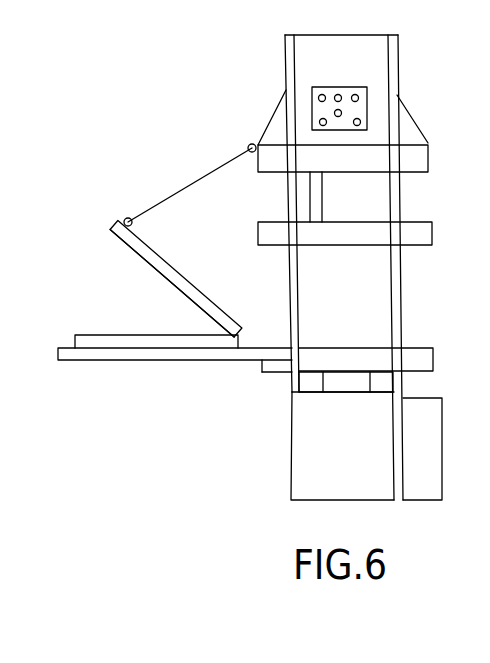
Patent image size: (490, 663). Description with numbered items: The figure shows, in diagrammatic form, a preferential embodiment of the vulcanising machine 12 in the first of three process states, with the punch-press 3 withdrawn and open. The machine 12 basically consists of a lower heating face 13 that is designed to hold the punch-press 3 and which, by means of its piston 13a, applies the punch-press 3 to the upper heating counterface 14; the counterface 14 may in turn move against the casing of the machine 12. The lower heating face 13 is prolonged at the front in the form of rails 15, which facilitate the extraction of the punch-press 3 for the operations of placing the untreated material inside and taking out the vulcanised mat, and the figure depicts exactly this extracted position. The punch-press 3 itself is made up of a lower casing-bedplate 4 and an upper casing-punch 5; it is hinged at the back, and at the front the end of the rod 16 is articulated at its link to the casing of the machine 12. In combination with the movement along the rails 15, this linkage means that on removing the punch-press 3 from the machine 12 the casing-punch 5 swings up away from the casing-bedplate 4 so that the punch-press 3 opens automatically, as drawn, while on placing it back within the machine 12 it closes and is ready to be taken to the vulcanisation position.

The punch-press 3 is at (180, 263).
The casing-bedplate 4 is at (105, 340).
The casing-punch 5 is at (212, 310).
The vulcanising machine 12 is at (418, 112).
The lower heating face 13 is at (423, 353).
The piston 13a is at (362, 382).
The upper heating counterface 14 is at (415, 233).
The rails 15 is at (152, 353).
The rod 16 is at (178, 193).